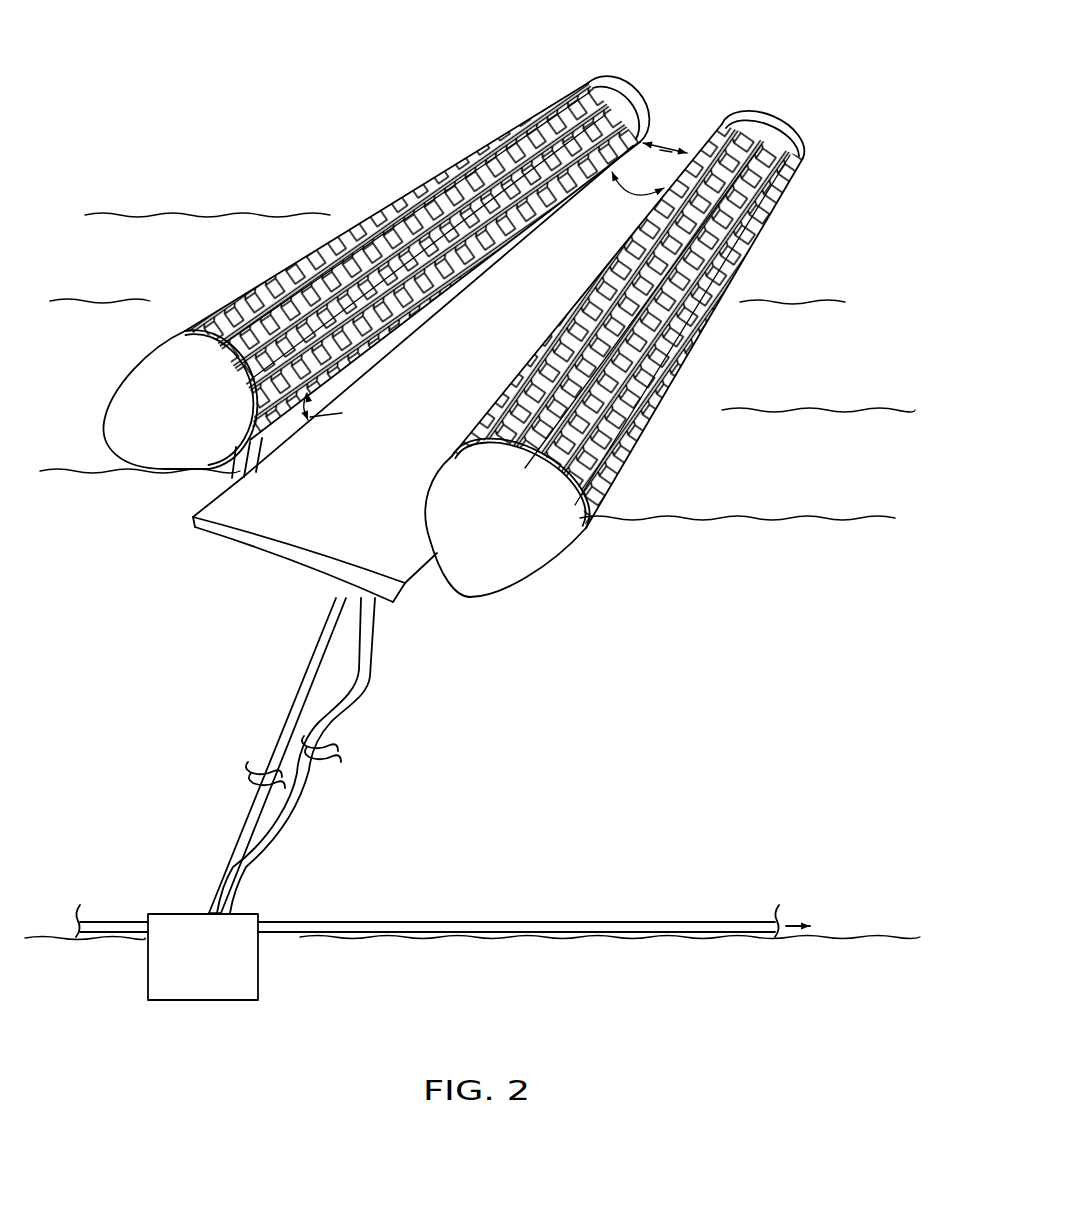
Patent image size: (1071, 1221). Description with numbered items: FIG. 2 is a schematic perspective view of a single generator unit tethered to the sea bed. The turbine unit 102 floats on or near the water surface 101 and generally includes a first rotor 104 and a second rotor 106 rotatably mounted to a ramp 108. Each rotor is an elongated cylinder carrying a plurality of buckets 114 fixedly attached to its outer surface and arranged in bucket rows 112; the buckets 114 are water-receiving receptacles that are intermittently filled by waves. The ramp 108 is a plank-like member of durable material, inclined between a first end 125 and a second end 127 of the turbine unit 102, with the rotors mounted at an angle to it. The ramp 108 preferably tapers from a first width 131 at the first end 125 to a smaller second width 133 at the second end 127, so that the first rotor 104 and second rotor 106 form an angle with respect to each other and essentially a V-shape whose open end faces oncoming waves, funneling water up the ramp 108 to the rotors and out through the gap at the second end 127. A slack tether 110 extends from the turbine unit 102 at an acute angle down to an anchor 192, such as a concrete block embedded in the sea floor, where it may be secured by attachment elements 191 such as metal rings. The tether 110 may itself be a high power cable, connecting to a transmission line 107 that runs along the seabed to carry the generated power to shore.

The surface 101 is at (772, 512).
The turbine unit 102 is at (682, 70).
The first rotor 104 is at (133, 370).
The second rotor 106 is at (567, 555).
The transmission line 107 is at (367, 668).
The ramp 108 is at (413, 374).
The tether 110 is at (293, 708).
The bucket rows 112 is at (503, 140).
The buckets 114 is at (277, 317).
The first end 125 is at (255, 553).
The second end 127 is at (662, 155).
The first width 131 is at (397, 578).
The second width 133 is at (663, 148).
The attachment elements 191 is at (207, 912).
The anchor 192 is at (223, 972).